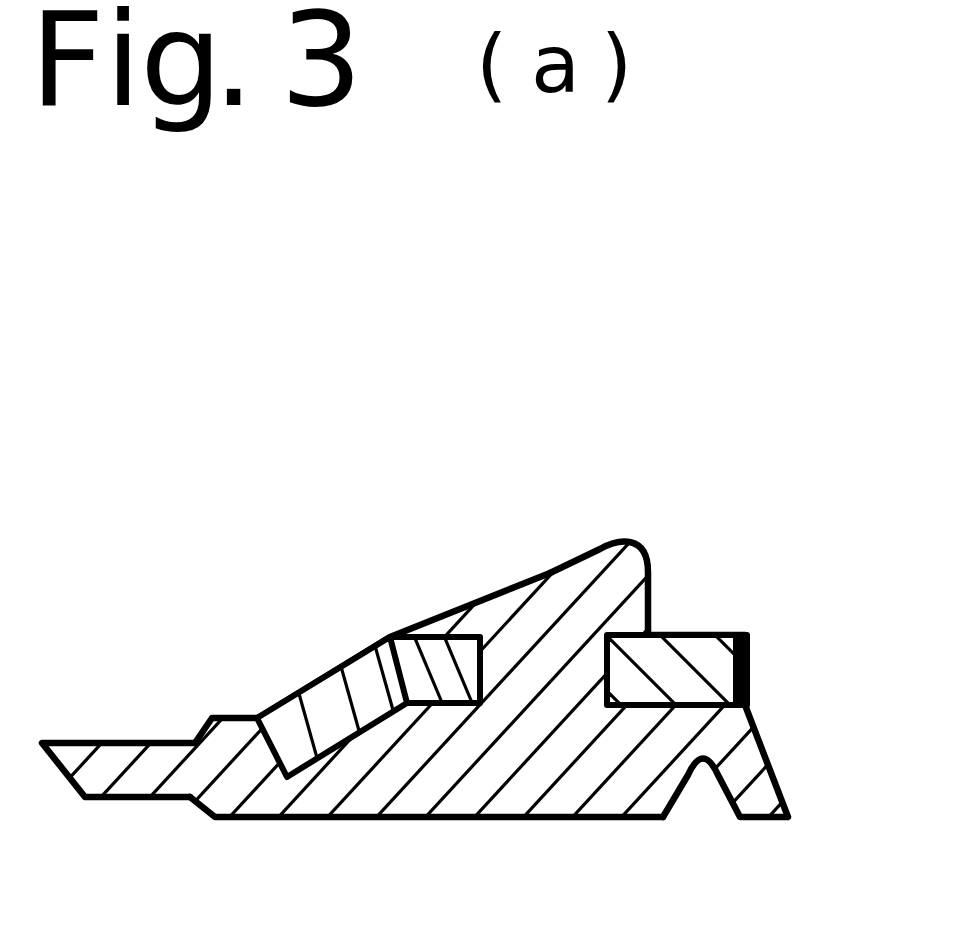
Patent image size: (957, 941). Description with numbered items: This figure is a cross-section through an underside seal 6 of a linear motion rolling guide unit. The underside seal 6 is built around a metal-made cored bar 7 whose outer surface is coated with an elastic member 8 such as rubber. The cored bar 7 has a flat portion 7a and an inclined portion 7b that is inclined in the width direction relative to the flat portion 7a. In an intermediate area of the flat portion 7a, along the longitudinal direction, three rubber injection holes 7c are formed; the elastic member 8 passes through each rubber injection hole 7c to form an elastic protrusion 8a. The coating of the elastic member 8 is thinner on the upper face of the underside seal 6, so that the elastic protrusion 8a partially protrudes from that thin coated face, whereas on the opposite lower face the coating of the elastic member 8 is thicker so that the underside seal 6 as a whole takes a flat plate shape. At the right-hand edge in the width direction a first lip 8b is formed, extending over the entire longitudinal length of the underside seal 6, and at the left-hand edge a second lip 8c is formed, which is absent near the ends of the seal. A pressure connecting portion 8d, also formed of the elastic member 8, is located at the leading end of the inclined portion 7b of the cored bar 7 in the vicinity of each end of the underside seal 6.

The underside seal 6 is at (493, 687).
The cored bar 7 is at (549, 633).
The flat portion 7a is at (699, 651).
The inclined portion 7b is at (350, 673).
The rubber injection hole 7c is at (592, 652).
The elastic member 8 is at (493, 687).
The elastic protrusion 8a is at (637, 543).
The first lip 8b is at (757, 797).
The second lip 8c is at (99, 778).
The pressure connecting portion 8d is at (219, 728).